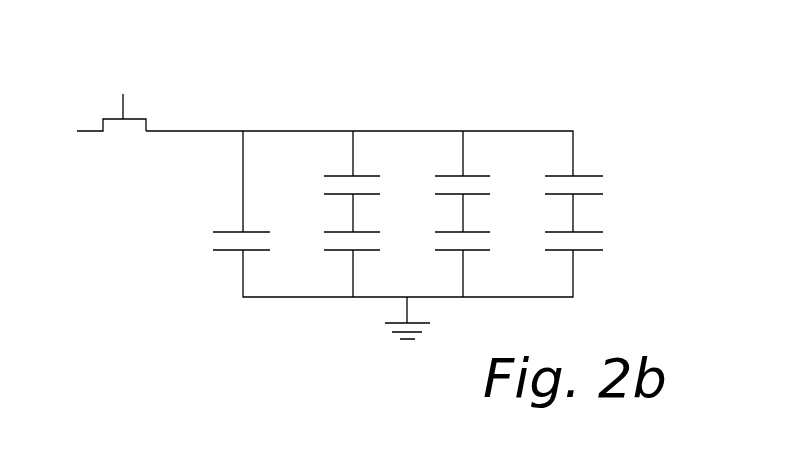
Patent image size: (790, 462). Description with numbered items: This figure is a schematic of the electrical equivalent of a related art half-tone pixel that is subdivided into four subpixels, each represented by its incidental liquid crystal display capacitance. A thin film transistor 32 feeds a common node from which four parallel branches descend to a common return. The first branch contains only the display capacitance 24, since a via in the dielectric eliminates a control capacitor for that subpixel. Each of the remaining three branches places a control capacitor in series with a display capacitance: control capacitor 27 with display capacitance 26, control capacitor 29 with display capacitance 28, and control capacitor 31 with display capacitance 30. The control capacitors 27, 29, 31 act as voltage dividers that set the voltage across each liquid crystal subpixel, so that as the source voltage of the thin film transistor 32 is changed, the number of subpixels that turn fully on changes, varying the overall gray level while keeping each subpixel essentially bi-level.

The liquid crystal display capacitance 24 is at (229, 232).
The liquid crystal display capacitance 26 is at (338, 251).
The control capacitor 27 is at (339, 176).
The liquid crystal display capacitance 28 is at (446, 251).
The control capacitor 29 is at (448, 175).
The liquid crystal display capacitance 30 is at (556, 251).
The control capacitor 31 is at (559, 175).
The thin film transistor 32 is at (139, 116).